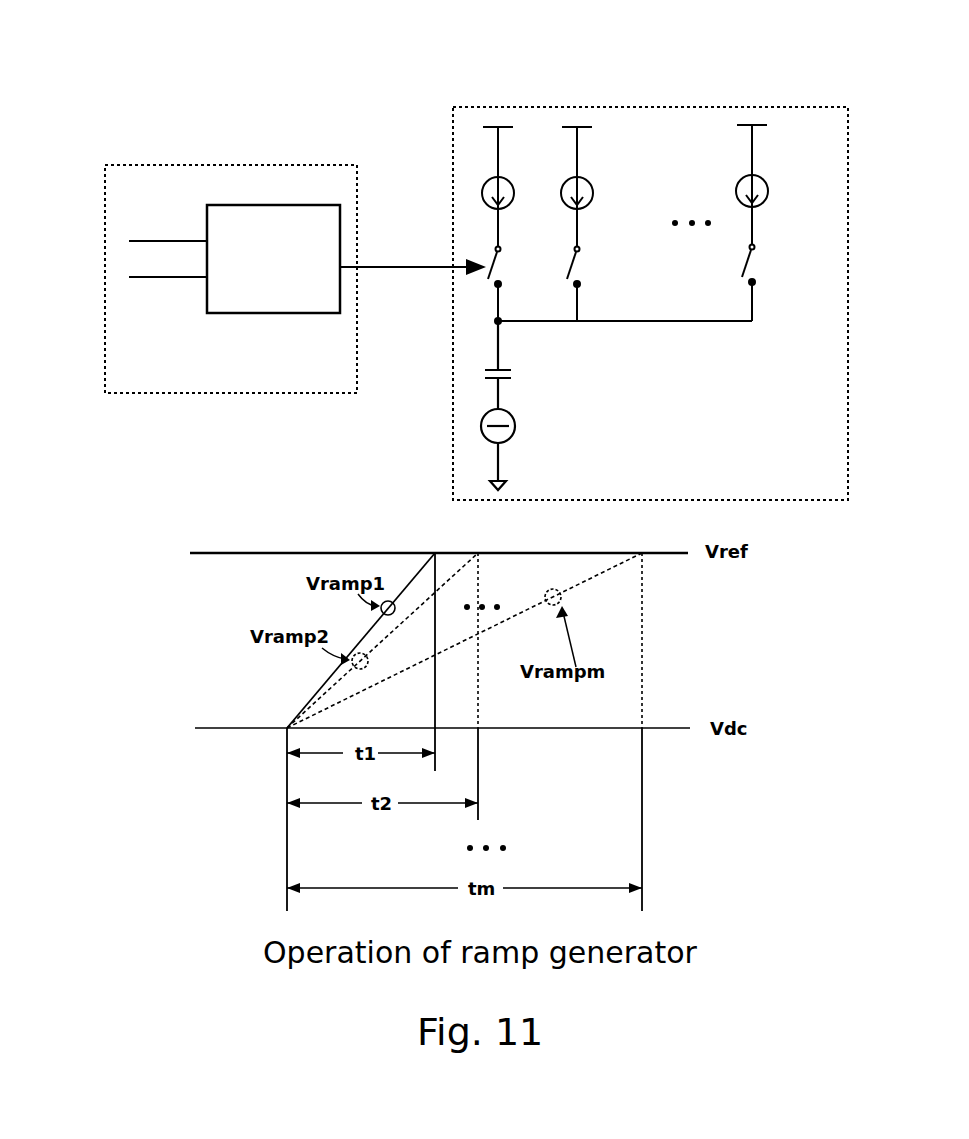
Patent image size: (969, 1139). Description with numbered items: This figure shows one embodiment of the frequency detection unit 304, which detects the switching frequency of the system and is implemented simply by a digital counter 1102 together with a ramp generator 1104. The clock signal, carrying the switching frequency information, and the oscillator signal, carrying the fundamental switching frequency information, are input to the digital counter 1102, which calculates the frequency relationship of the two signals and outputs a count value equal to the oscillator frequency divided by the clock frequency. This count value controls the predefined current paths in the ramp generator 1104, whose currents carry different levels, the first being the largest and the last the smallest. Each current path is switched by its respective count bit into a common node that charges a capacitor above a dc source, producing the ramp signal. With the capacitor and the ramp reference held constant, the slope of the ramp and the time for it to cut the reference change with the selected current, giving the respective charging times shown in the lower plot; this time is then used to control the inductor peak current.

The frequency detection unit 304 is at (283, 62).
The digital counter 1102 is at (177, 165).
The ramp generator 1104 is at (650, 303).